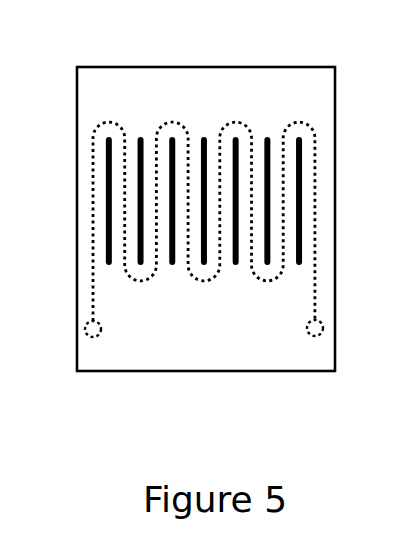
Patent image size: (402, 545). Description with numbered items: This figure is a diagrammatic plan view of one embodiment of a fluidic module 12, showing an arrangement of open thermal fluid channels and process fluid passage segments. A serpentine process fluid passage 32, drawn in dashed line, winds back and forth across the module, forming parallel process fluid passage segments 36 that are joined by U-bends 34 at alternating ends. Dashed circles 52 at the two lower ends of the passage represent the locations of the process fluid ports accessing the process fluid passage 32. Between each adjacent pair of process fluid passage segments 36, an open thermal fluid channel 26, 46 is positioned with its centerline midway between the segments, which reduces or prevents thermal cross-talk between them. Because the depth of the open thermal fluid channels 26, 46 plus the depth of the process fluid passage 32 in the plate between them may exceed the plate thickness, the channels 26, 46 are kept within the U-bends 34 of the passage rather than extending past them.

The panel 12 is at (137, 413).
The open thermal fluid channel 26 is at (173, 132).
The open thermal fluid channel 46 is at (174, 163).
The process fluid passage 32 is at (211, 207).
The U-bends 34 is at (173, 132).
The process fluid passage segments 36 is at (250, 192).
The process fluid ports 52 is at (85, 333).